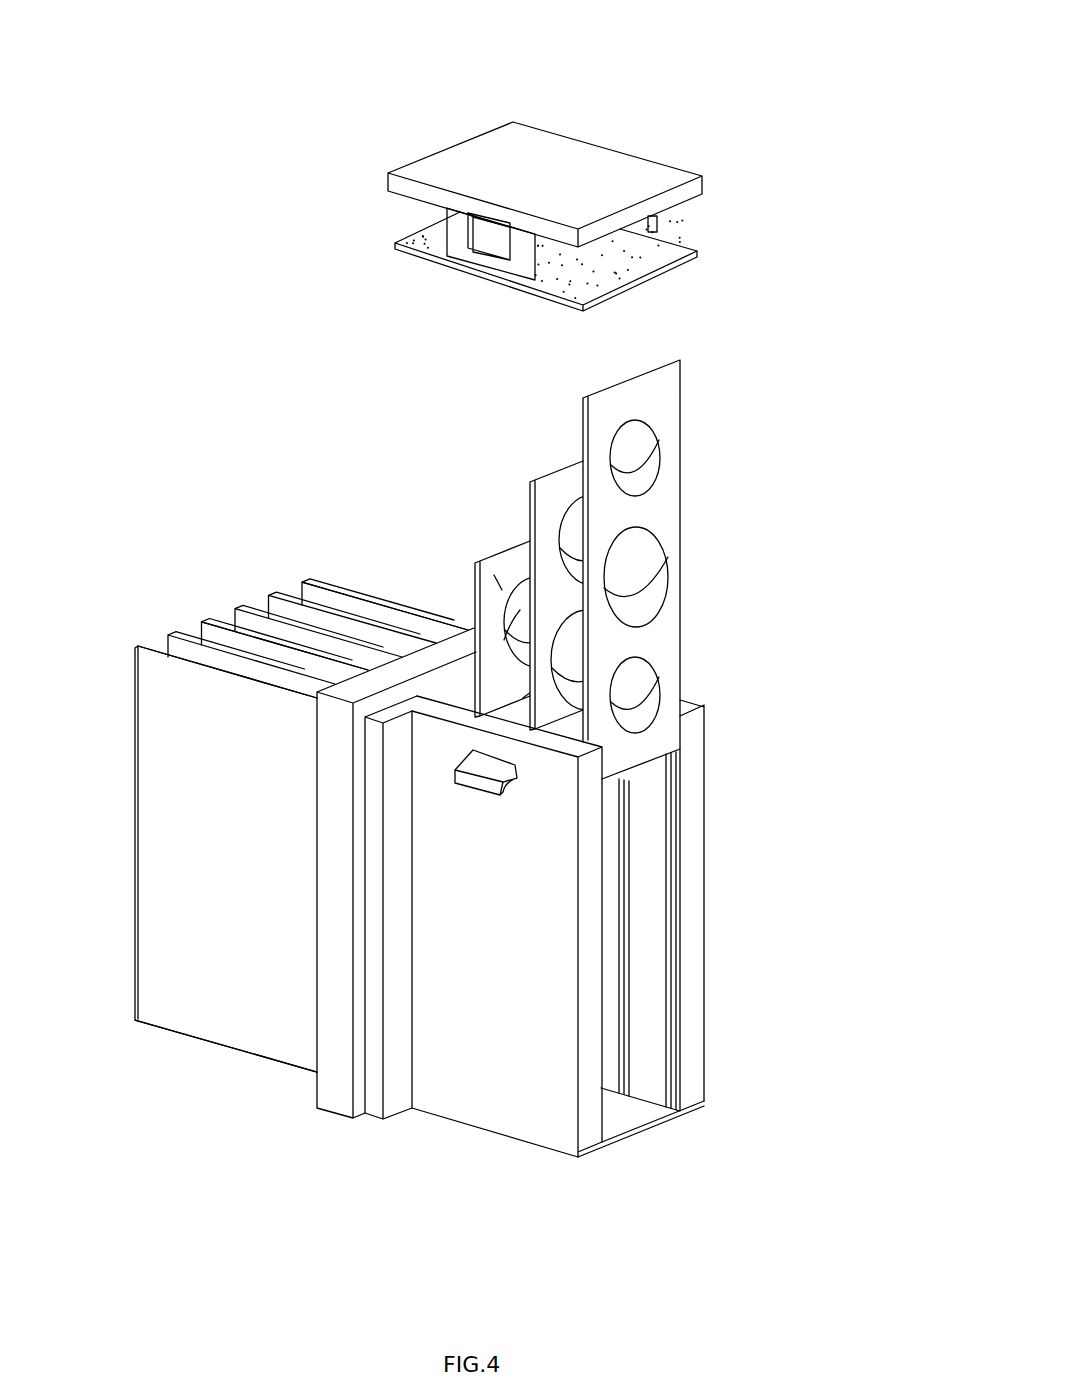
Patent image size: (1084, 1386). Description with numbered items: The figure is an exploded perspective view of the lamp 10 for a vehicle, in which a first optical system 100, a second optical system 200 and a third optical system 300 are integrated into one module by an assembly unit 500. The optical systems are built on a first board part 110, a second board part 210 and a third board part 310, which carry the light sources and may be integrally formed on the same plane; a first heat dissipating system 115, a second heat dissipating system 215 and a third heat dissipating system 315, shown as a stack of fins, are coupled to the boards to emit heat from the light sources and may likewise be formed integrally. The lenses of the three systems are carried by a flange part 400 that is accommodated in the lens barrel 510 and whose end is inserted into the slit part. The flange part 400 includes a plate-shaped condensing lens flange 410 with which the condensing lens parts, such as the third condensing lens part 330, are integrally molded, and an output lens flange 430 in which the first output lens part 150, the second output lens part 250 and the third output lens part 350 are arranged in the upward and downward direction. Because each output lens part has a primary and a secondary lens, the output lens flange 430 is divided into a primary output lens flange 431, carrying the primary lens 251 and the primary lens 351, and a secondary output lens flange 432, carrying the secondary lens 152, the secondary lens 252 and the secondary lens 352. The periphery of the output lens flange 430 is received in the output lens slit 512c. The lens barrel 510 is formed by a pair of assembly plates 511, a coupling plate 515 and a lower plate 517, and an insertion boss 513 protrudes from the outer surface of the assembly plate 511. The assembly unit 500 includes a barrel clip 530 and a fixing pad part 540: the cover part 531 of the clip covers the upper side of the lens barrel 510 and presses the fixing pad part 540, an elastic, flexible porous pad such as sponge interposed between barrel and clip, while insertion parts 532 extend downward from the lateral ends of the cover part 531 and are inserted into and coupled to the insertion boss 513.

The lamp for a vehicle 10 is at (162, 111).
The first optical system 100 is at (867, 686).
The first board part 110 is at (333, 1010).
The first heat dissipating system 115 is at (257, 627).
The first output lens part 150 is at (762, 677).
The (1-2)-th lens 152 is at (650, 673).
The second optical system 200 is at (867, 560).
The second board part 210 is at (227, 672).
The second heat dissipating system 215 is at (285, 646).
The second output lens part 250 is at (762, 551).
The (2-1)-th lens 251 is at (498, 582).
The (2-2)-th lens 252 is at (650, 548).
The third optical system 300 is at (867, 447).
The third board part 310 is at (226, 1046).
The third heat dissipating system 315 is at (385, 606).
The third condensing lens part 330 is at (518, 638).
The third output lens part 350 is at (762, 437).
The (3-1)-th lens 351 is at (570, 518).
The (3-2)-th lens 352 is at (648, 434).
The flange part 400 is at (112, 172).
The condensing lens flange 410 is at (479, 560).
The output lens flange 430 is at (762, 400).
The primary output lens flange 431 is at (555, 482).
The secondary output lens flange 432 is at (652, 402).
The assembly unit 500 is at (112, 262).
The lens barrel 510 is at (785, 1087).
The assembly plate 511 is at (690, 1082).
The output lens slit 512c is at (676, 978).
The insertion boss 513 is at (481, 773).
The coupling plate 515 is at (397, 1105).
The lower plate 517 is at (645, 1130).
The barrel clip 530 is at (550, 66).
The cover part 531 is at (546, 145).
The insertion part 532 is at (648, 221).
The fixing pad part 540 is at (551, 277).